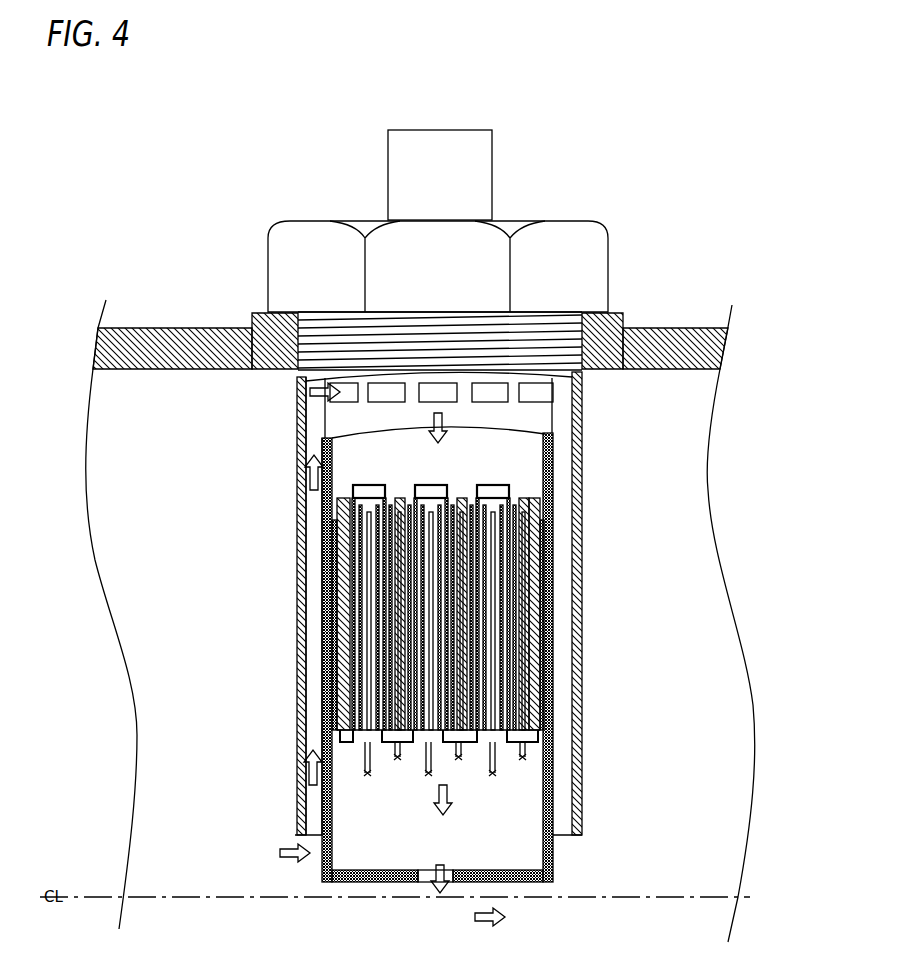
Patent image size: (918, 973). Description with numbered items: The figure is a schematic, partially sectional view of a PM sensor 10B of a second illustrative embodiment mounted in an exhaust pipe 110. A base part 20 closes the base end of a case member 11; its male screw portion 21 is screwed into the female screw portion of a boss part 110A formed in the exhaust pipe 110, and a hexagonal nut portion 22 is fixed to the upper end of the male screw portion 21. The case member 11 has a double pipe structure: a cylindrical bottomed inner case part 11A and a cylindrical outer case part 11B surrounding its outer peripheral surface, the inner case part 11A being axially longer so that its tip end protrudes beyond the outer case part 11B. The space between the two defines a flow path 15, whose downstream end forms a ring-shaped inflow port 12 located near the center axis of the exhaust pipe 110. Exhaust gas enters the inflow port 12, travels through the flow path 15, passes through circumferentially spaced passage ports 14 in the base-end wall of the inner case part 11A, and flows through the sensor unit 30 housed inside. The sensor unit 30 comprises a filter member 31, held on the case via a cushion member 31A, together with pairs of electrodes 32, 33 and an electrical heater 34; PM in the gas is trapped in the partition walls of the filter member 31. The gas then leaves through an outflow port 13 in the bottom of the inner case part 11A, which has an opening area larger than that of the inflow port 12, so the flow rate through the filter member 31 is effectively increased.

The PM sensor 10B is at (331, 163).
The exhaust pipe 110 is at (160, 327).
The boss part 110A is at (263, 313).
The base part 20 is at (491, 287).
The male screw portion 21 is at (593, 287).
The nut portion 22 is at (545, 323).
The passage ports 14 is at (545, 393).
The flow path 15 is at (300, 580).
The case member 11 is at (384, 606).
The inner case part 11A is at (322, 740).
The outer case part 11B is at (300, 770).
The electrical heater 34 is at (553, 470).
The cushion member 31A is at (553, 545).
The sensor unit 30 is at (497, 630).
The filter member 31 is at (553, 617).
The electrode 32 is at (553, 641).
The electrode 33 is at (493, 677).
The inflow port 12 is at (312, 877).
The outflow port 13 is at (432, 880).